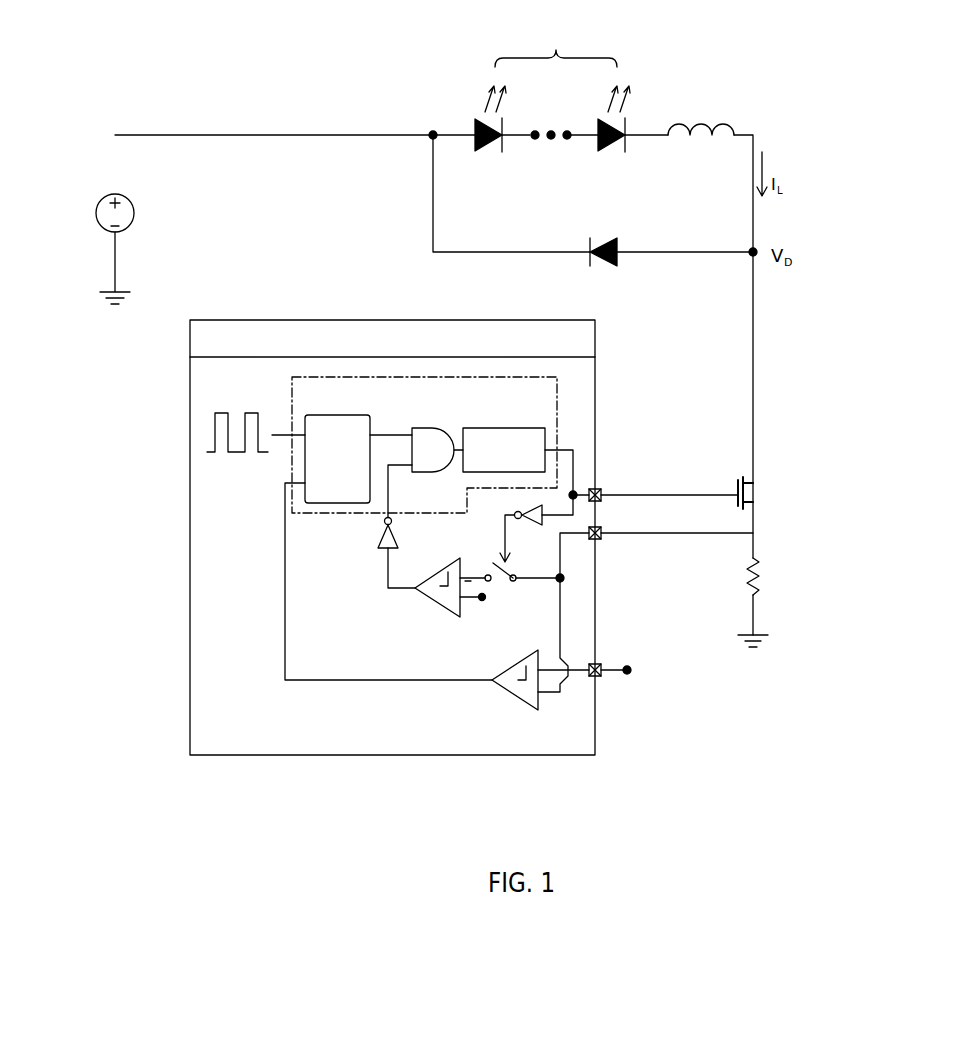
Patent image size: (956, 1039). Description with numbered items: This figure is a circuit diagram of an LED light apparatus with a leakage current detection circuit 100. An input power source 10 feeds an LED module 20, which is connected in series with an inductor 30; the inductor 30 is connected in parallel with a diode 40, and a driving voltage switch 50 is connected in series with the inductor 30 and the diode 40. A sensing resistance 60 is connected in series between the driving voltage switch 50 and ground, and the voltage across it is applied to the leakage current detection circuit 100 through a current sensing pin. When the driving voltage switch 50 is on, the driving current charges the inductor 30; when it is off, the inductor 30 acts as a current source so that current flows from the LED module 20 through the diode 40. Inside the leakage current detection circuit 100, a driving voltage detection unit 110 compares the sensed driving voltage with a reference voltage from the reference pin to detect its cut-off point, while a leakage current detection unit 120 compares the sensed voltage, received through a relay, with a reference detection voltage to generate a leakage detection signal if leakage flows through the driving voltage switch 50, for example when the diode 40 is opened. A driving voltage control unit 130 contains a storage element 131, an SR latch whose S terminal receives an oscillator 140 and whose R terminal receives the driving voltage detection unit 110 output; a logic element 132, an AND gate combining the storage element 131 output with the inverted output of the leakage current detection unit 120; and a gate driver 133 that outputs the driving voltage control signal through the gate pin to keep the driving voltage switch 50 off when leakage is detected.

The input power source 10 is at (97, 215).
The LED module 20 is at (552, 85).
The inductor 30 is at (700, 122).
The diode 40 is at (620, 243).
The driving voltage switch 50 is at (757, 500).
The sensing resistance 60 is at (760, 582).
The leakage current detection circuit 100 is at (345, 318).
The driving voltage detection unit 110 is at (502, 700).
The leakage current detection unit 120 is at (430, 605).
The driving voltage control unit 130 is at (360, 516).
The storage element 131 is at (350, 415).
The logic element 132 is at (432, 428).
The gate driver 133 is at (508, 428).
The oscillator 140 is at (238, 465).